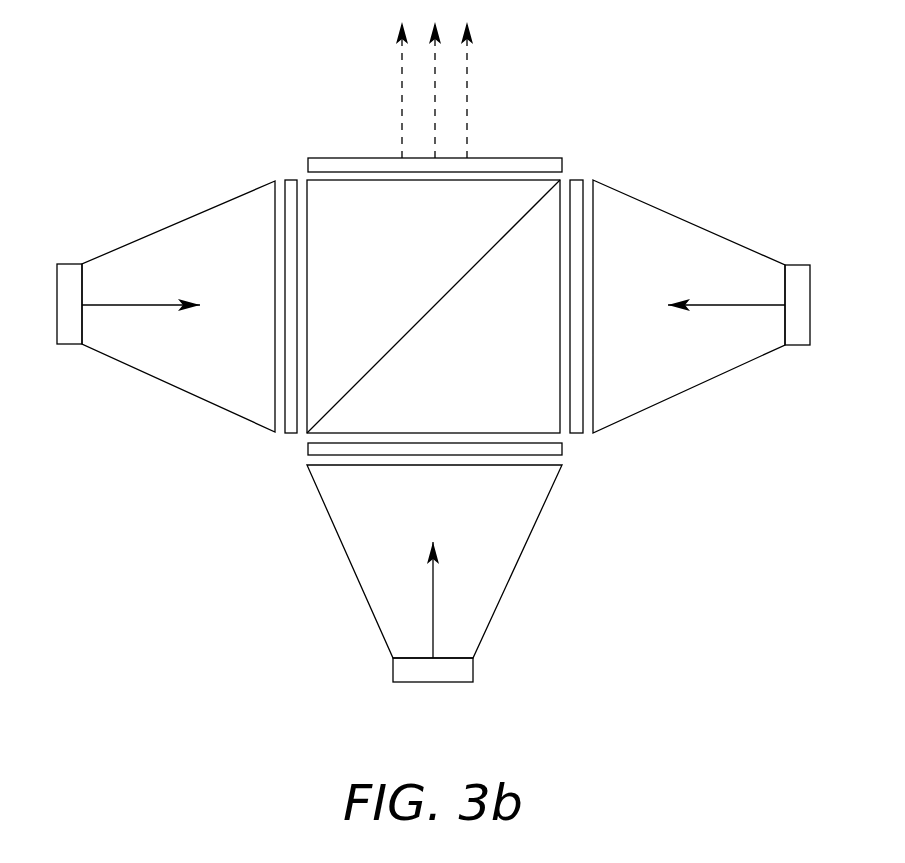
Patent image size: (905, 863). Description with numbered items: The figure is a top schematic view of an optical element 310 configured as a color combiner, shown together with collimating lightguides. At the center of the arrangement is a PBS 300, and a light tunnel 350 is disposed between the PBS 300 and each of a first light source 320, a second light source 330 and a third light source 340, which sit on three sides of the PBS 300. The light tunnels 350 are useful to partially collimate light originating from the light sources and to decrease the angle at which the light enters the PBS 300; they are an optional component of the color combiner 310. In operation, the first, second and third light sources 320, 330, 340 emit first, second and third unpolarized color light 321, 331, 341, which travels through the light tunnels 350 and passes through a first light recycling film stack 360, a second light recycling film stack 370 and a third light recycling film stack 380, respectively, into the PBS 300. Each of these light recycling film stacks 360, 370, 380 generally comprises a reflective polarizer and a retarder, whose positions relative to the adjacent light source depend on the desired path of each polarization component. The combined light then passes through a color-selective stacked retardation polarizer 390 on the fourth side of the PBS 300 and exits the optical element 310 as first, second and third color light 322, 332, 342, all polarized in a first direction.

The PBS 300 is at (303, 173).
The optical element 310 is at (143, 122).
The first light source 320 is at (57, 345).
The first unpolarized color light 321 is at (115, 302).
The first color light 322 is at (400, 73).
The second light source 330 is at (393, 682).
The second unpolarized color light 331 is at (435, 610).
The second color light 332 is at (433, 117).
The third light source 340 is at (810, 346).
The third unpolarized color light 341 is at (763, 303).
The third color light 342 is at (468, 72).
The light tunnel 350 is at (155, 360).
The first light recycling film stack 360 is at (288, 434).
The second light recycling film stack 370 is at (562, 449).
The third light recycling film stack 380 is at (577, 179).
The color-selective stacked retardation polarizer 390 is at (562, 159).